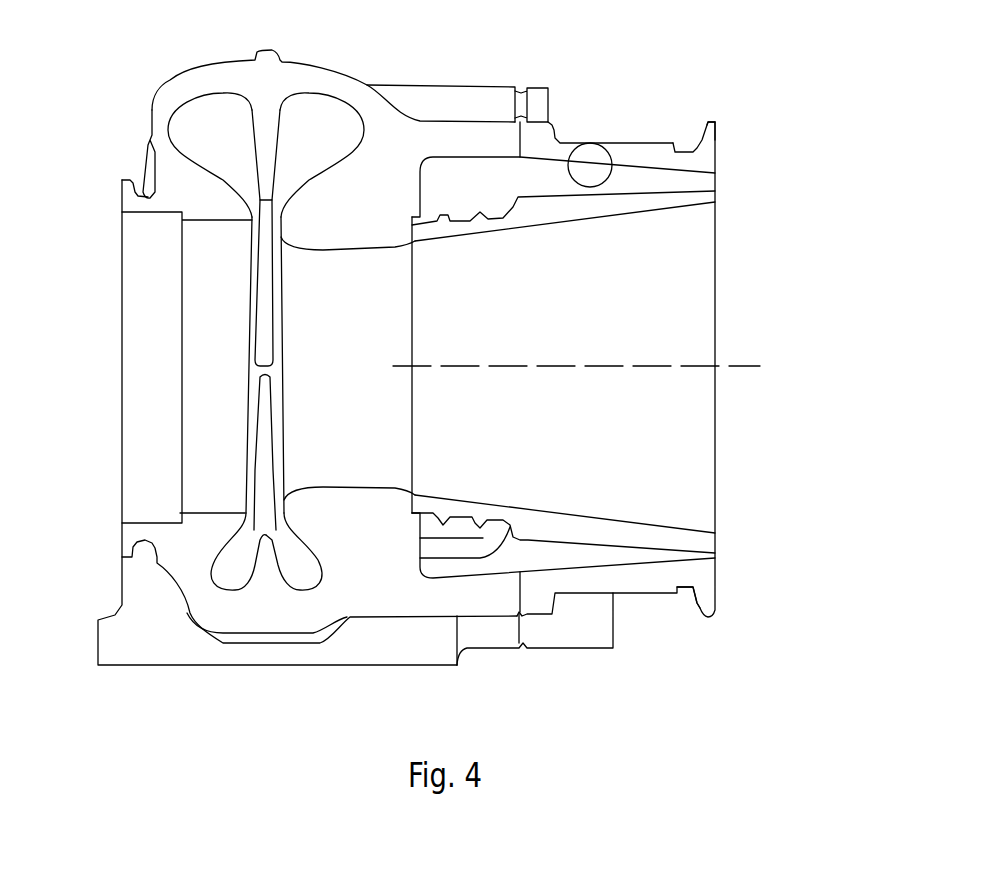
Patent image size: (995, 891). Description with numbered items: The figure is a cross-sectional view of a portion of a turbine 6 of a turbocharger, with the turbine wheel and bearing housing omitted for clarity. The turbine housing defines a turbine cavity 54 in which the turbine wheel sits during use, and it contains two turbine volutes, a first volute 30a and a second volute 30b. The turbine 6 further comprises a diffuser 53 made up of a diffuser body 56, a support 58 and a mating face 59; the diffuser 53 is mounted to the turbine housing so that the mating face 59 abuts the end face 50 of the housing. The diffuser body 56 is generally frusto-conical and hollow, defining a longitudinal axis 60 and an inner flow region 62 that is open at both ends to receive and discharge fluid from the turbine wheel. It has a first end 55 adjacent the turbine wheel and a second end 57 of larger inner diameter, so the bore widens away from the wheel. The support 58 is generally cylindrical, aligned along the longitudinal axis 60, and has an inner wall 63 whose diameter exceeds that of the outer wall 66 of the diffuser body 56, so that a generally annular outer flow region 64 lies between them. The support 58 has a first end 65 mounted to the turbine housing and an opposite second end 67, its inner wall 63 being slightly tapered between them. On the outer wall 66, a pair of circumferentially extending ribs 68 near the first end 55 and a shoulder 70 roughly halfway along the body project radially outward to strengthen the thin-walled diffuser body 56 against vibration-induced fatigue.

The turbine 6 is at (110, 88).
The turbine cavity 54 is at (263, 295).
The first end 55 is at (380, 418).
The first volute 30a is at (228, 568).
The second volute 30b is at (298, 575).
The second end 57 is at (750, 278).
The longitudinal axis 60 is at (737, 365).
The inner flow region 62 is at (668, 427).
The diffuser body 56 is at (698, 198).
The shoulder 70 is at (527, 542).
The circumferentially extending ribs 68 is at (480, 528).
The outer wall 66 is at (573, 542).
The first end 65 is at (540, 121).
The inner wall 63 is at (613, 150).
The support 58 is at (646, 150).
The second end 67 is at (704, 124).
The diffuser 53 is at (763, 113).
The outer flow region 64 is at (648, 557).
The mating face 59 is at (513, 593).
The end face 50 is at (513, 593).